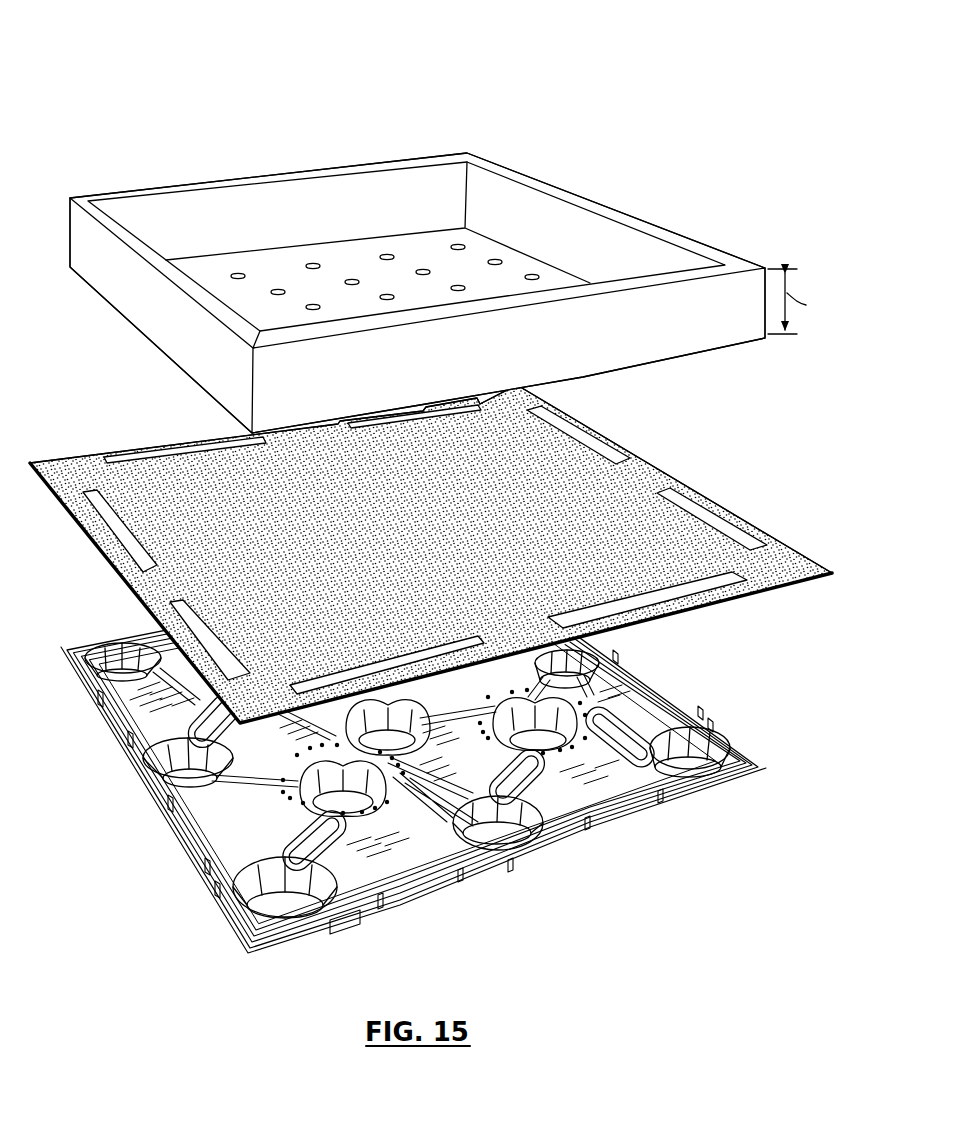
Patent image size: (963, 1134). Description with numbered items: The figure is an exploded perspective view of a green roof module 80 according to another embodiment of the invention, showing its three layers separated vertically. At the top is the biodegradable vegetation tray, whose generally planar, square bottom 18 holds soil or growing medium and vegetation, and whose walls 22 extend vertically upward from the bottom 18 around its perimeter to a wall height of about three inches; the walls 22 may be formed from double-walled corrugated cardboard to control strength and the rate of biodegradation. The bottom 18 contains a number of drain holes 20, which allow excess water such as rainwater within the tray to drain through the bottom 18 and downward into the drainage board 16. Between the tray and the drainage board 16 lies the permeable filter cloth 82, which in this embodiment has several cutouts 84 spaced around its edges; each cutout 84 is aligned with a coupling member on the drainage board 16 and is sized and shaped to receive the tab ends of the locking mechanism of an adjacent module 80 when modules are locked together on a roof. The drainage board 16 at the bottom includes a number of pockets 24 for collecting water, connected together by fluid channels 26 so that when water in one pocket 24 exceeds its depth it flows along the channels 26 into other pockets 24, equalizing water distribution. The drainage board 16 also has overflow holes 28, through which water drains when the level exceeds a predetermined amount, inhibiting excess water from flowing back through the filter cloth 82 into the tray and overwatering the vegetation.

The module 80 is at (166, 66).
The bottom 18 is at (267, 265).
The walls 22 is at (315, 203).
The drain holes 20 is at (458, 247).
The filter cloth 82 is at (431, 554).
The cutouts 84 is at (180, 600).
The drainage board 16 is at (431, 760).
The fluid channels 26 is at (633, 737).
The pockets 24 is at (683, 765).
The overflow holes 28 is at (290, 798).